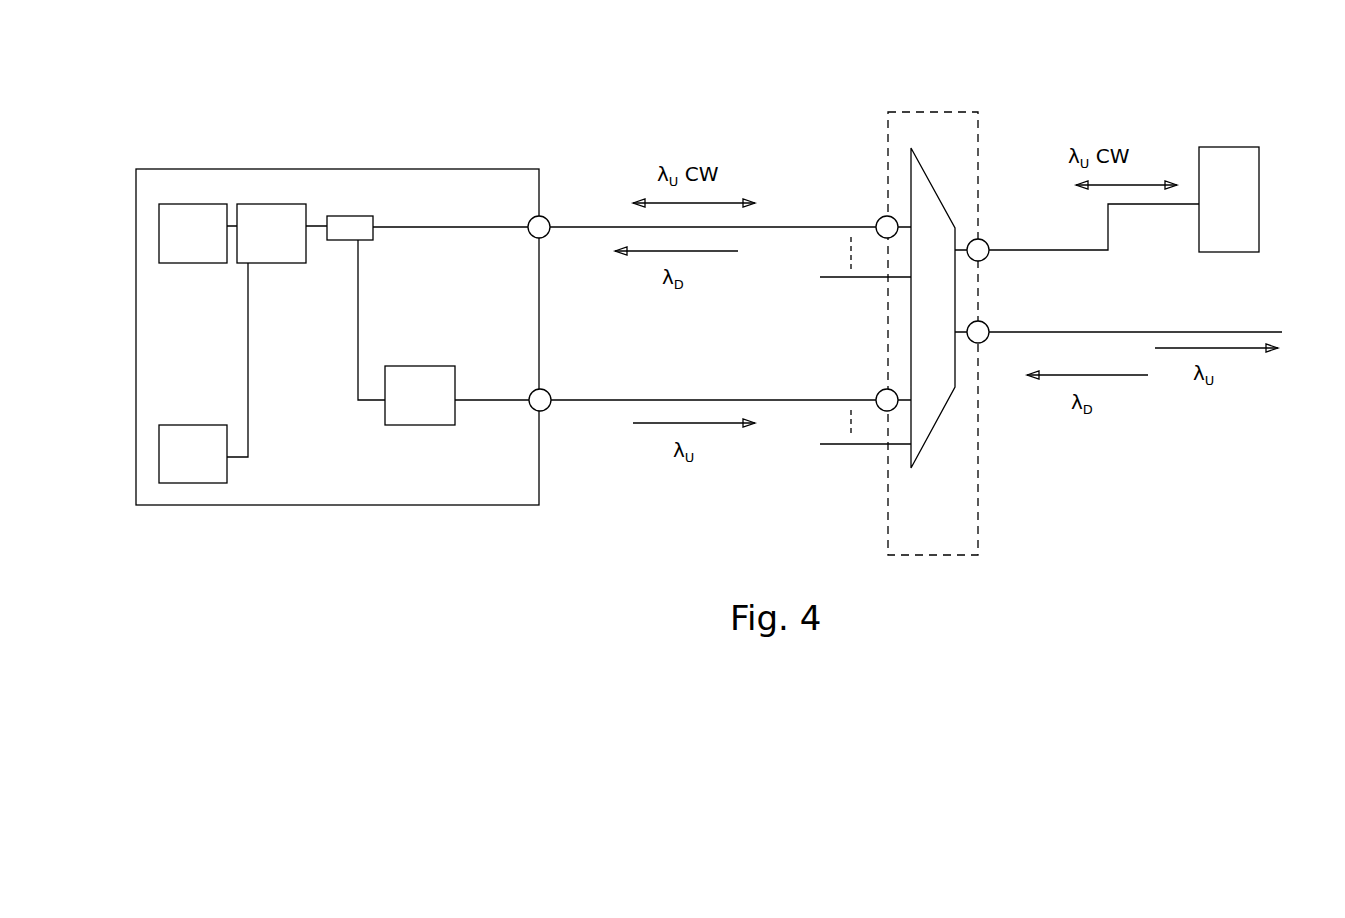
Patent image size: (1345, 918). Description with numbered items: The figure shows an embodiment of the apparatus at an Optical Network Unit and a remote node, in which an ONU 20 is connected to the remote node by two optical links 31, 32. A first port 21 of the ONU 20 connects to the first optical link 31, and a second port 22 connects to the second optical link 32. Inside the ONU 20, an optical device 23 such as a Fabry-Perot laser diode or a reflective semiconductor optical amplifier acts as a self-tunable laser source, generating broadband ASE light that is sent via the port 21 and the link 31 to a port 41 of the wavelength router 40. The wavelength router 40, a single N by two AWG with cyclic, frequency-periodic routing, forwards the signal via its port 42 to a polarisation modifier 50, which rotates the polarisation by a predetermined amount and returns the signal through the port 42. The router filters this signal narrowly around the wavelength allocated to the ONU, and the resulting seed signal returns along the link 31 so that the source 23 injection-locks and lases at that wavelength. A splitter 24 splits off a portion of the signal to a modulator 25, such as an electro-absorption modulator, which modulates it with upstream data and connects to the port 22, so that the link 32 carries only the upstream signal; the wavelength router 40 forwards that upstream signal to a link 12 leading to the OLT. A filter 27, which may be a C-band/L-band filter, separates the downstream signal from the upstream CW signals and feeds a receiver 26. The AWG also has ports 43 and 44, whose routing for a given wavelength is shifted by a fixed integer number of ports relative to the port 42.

The link 12 is at (1272, 330).
The ONU 20 is at (219, 168).
The first port 21 is at (543, 214).
The second port 22 is at (547, 388).
The optical device 23 is at (158, 228).
The splitter 24 is at (359, 216).
The modulator 25 is at (427, 366).
The receiver 26 is at (190, 425).
The filter 27 is at (278, 204).
The first optical link 31 is at (594, 226).
The second optical link 32 is at (604, 398).
The wavelength router 40 is at (907, 112).
The port 41 is at (877, 218).
The first port 42 is at (982, 241).
The port 43 is at (877, 392).
The port 44 is at (987, 342).
The polarisation modifier 50 is at (1259, 178).